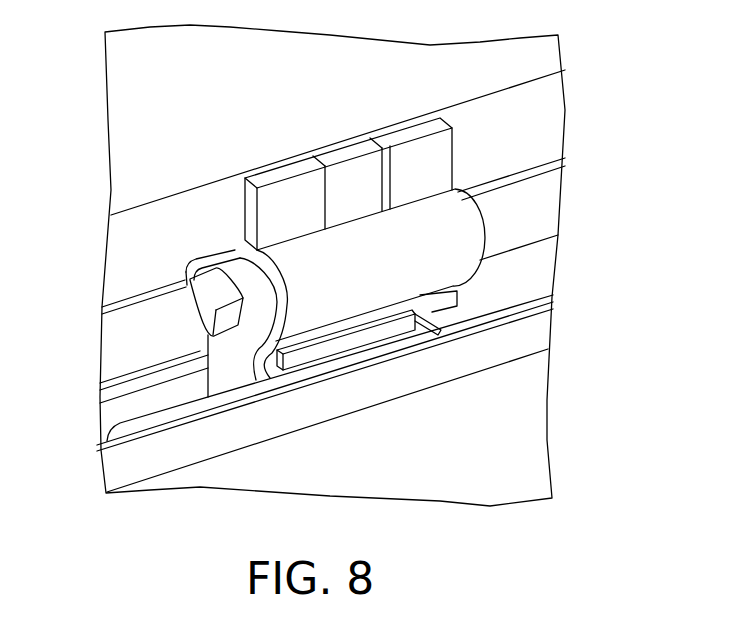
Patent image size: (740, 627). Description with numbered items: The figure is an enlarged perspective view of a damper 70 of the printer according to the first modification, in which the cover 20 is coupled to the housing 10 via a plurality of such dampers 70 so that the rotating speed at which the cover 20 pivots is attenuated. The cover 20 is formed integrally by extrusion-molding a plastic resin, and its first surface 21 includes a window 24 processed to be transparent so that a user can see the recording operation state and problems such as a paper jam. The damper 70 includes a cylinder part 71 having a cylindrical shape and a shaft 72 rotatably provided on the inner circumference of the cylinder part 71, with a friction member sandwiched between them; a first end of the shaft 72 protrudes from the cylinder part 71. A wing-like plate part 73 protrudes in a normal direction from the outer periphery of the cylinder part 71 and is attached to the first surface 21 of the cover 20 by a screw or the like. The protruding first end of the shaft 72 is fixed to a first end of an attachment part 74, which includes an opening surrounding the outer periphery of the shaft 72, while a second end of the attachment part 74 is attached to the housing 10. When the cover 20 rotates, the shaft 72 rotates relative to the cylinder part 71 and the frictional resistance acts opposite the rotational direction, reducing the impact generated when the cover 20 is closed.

The housing 10 is at (383, 392).
The cover 20 is at (72, 213).
The first surface 21 is at (548, 121).
The window 24 is at (133, 117).
The damper 70 is at (326, 229).
The cylinder part 71 is at (467, 214).
The shaft 72 is at (203, 315).
The plate part 73 is at (284, 177).
The attachment part 74 is at (223, 365).